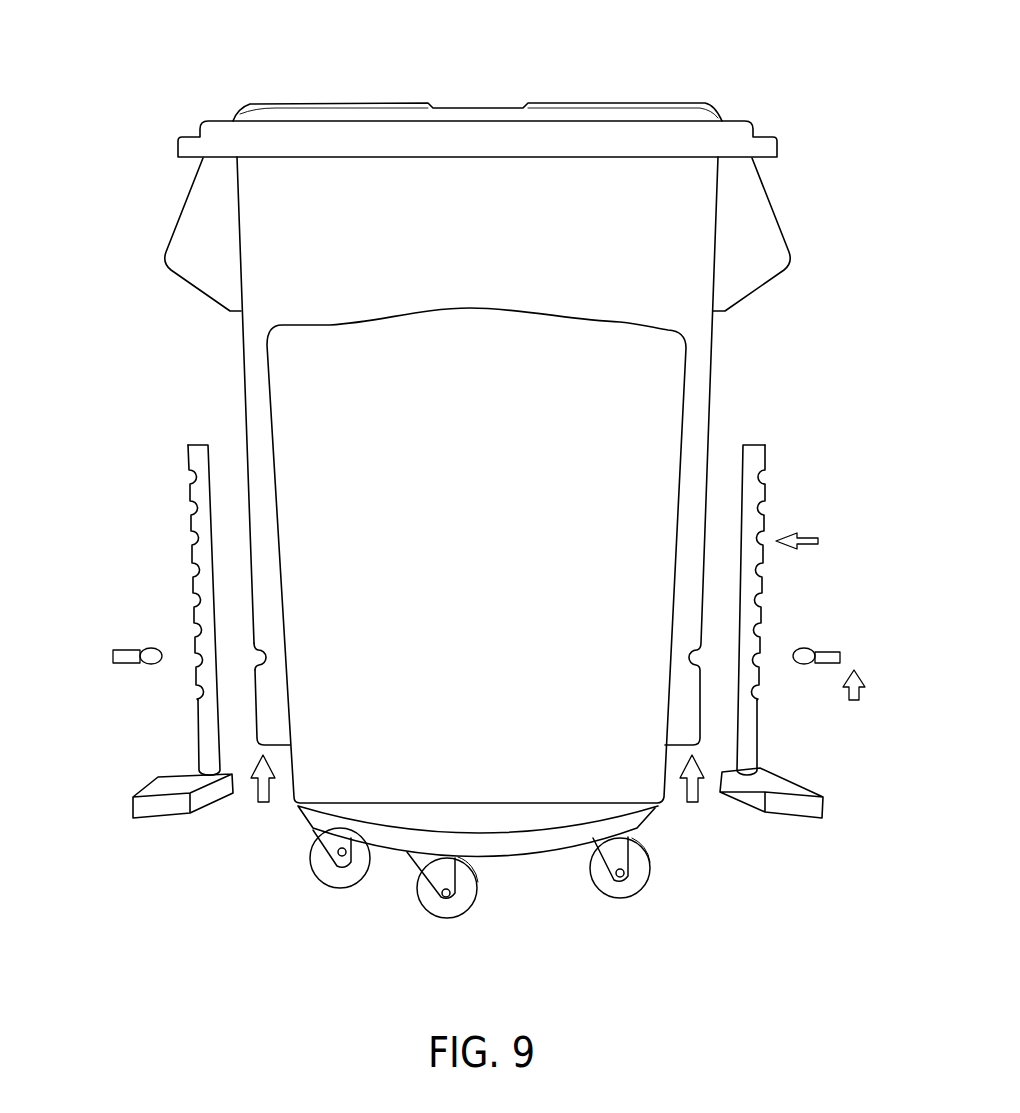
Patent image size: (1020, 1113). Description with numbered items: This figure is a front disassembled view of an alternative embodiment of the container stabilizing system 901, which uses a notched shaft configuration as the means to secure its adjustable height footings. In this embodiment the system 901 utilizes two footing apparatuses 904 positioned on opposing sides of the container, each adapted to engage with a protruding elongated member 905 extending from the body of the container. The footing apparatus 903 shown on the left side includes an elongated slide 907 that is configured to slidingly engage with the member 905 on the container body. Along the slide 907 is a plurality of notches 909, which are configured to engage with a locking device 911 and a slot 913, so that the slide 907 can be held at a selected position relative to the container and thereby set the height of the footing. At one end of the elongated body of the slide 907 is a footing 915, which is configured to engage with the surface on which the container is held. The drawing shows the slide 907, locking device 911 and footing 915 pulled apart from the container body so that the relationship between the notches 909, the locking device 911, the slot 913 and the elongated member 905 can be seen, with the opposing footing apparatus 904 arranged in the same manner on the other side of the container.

The system 901 is at (172, 44).
The footing apparatus 903 is at (70, 546).
The footing apparatus 904 is at (847, 472).
The protruding elongated member 905 is at (243, 360).
The elongated slide 907 is at (187, 450).
The notches 909 is at (196, 603).
The locking device 911 is at (113, 656).
The slot 913 is at (264, 655).
The footing 915 is at (133, 797).